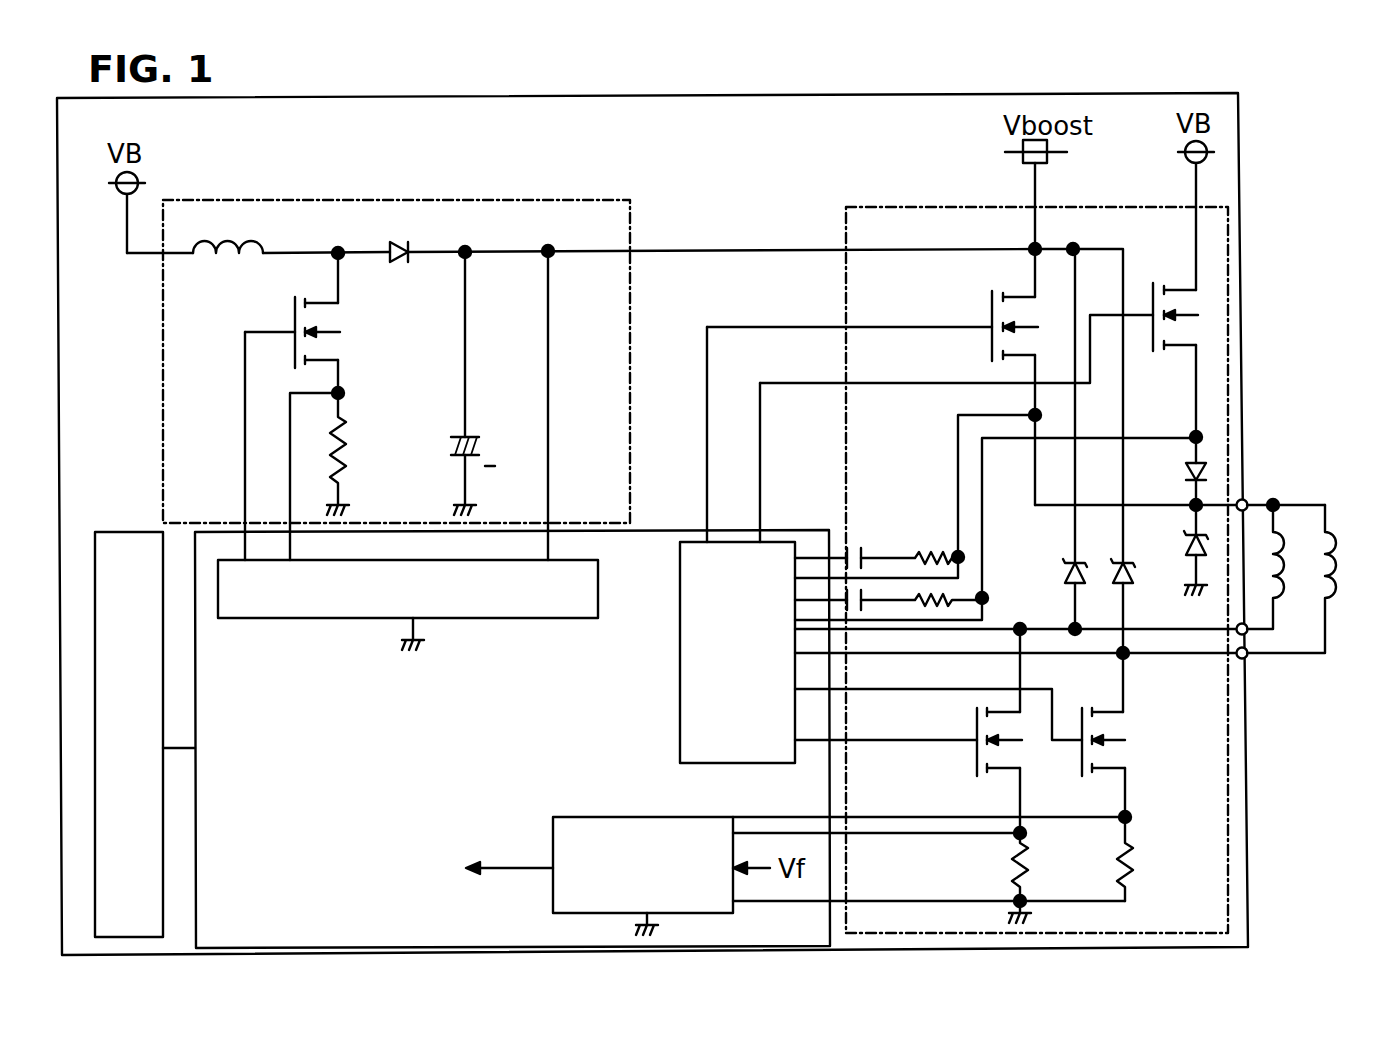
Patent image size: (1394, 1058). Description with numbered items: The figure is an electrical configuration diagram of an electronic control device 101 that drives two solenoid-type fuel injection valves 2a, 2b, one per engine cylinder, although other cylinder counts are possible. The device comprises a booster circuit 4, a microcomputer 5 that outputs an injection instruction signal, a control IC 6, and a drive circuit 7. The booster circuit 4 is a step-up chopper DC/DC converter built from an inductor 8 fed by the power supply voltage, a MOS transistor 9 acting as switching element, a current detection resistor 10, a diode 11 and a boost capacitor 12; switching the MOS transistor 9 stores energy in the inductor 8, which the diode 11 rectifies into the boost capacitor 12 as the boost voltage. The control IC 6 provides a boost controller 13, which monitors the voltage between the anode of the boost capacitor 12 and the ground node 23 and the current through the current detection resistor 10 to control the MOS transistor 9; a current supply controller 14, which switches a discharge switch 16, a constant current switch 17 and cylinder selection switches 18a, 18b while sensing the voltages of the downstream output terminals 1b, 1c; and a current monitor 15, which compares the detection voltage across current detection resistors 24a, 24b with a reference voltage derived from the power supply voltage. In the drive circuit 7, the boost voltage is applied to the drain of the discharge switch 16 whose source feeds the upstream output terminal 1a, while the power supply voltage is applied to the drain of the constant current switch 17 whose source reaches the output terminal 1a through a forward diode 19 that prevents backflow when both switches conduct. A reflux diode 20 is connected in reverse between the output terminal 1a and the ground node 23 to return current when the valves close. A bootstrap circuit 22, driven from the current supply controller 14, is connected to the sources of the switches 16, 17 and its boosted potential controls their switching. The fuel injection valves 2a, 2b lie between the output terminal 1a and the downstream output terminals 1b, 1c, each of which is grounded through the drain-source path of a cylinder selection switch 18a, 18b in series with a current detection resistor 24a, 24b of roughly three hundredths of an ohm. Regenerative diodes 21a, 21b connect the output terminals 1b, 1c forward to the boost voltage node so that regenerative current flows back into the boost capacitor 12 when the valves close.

The electronic control device 101 is at (790, 93).
The output terminal on the upstream 1a is at (1246, 497).
The output terminal on the downstream 1b is at (1247, 633).
The output terminal on the downstream 1c is at (1245, 658).
The fuel injection valve 2a is at (1280, 606).
The fuel injection valve 2b is at (1330, 606).
The booster circuit 4 is at (440, 198).
The microcomputer 5 is at (136, 532).
The control IC 6 is at (640, 526).
The drive circuit 7 is at (926, 207).
The inductor 8 is at (262, 245).
The MOS transistor 9 is at (350, 335).
The current detection resistor 10 is at (350, 440).
The diode 11 is at (402, 241).
The boost capacitor 12 is at (478, 449).
The boost controller 13 is at (598, 590).
The current supply controller 14 is at (680, 613).
The current monitor 15 is at (553, 821).
The discharge switch 16 is at (992, 297).
The constant current switch 17 is at (1180, 284).
The cylinder selection switch 18a is at (972, 762).
The cylinder selection switch 18b is at (1135, 735).
The diode 19 is at (1188, 470).
The reflux diode 20 is at (1188, 548).
The regenerative diode 21a is at (1064, 575).
The regenerative diode 21b is at (1135, 583).
The bootstrap circuit 22 is at (891, 540).
The ground node 23 is at (352, 508).
The current detection resistor 24a is at (1032, 853).
The current detection resistor 24b is at (1137, 853).